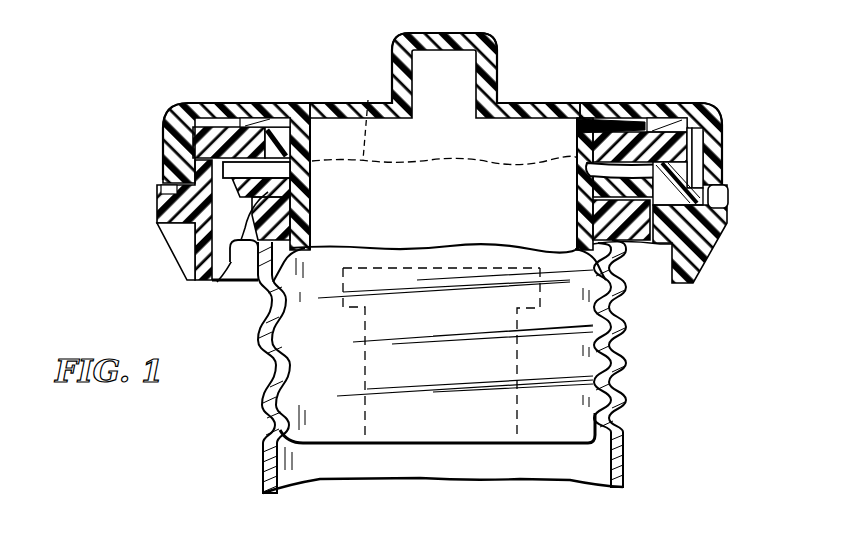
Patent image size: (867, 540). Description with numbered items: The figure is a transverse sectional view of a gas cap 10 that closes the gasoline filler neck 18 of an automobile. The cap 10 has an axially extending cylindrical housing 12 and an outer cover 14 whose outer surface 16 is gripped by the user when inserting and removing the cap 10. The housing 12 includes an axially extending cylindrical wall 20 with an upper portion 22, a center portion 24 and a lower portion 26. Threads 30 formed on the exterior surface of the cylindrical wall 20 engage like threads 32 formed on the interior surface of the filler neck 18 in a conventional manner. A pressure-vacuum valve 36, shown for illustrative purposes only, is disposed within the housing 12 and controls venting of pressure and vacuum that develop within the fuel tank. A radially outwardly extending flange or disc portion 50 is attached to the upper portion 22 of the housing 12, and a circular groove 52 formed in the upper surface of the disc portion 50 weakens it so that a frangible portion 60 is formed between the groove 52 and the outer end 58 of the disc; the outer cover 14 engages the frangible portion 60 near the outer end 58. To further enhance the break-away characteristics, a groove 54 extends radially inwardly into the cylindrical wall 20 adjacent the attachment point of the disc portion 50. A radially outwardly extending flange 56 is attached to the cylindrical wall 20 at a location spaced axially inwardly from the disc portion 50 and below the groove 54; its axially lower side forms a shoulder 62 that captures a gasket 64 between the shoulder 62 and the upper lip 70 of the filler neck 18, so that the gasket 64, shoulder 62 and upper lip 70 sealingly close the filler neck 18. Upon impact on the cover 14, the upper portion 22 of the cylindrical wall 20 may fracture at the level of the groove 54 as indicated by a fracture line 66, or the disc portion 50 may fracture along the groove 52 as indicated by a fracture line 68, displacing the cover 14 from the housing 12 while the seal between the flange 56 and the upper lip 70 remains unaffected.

The gas cap 10 is at (160, 86).
The cylindrical housing 12 is at (297, 253).
The outer cover 14 is at (533, 108).
The outer surface 16 is at (165, 167).
The gasoline filler neck 18 is at (625, 478).
The cylindrical wall 20 is at (300, 205).
The upper portion 22 is at (603, 140).
The center portion 24 is at (302, 346).
The lower portion 26 is at (293, 446).
The threads 30 is at (600, 320).
The threads 32 is at (600, 374).
The pressure-vacuum valve 36 is at (465, 420).
The disc portion 50 is at (262, 105).
The circular groove 52 is at (607, 140).
The groove 54 is at (703, 170).
The radially outwardly extending flange 56 is at (690, 170).
The outer end 58 is at (692, 138).
The frangible portion 60 is at (275, 118).
The shoulder 62 is at (637, 217).
The gasket 64 is at (222, 283).
The fracture line 66 is at (361, 117).
The fracture line 68 is at (277, 148).
The upper lip 70 is at (705, 258).